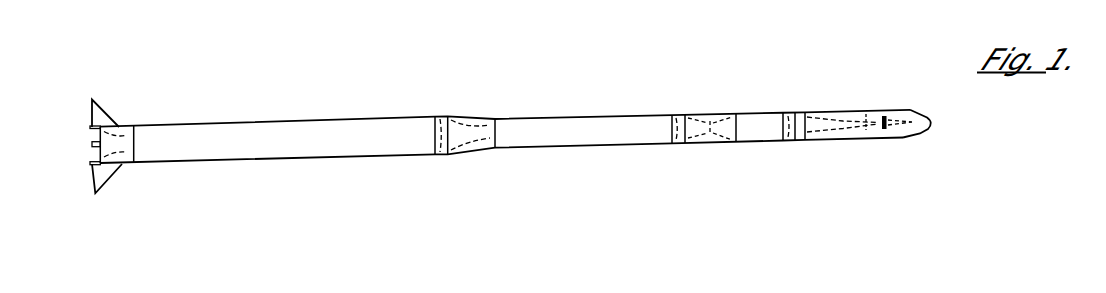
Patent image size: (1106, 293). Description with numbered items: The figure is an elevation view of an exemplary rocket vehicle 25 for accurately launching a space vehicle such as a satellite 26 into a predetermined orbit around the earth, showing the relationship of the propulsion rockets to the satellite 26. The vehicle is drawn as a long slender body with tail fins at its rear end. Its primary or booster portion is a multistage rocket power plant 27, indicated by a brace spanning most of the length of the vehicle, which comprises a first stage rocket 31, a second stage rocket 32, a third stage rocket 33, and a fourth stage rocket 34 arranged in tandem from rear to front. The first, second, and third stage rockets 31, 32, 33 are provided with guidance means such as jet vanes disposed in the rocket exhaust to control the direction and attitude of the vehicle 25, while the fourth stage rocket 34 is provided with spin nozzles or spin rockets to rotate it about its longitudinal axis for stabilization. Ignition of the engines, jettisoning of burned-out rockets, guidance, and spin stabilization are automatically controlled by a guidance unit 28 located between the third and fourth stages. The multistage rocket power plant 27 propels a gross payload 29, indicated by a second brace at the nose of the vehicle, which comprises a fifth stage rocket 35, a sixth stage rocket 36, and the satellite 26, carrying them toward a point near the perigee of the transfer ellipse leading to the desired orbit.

The rocket vehicle 25 is at (500, 151).
The satellite 26 is at (889, 117).
The multistage rocket power plant 27 is at (856, 85).
The guidance unit 28 is at (802, 113).
The gross payload 29 is at (937, 137).
The first stage rocket 31 is at (268, 155).
The second stage rocket 32 is at (613, 138).
The third stage rocket 33 is at (770, 135).
The fourth stage rocket 34 is at (842, 118).
The fifth stage rocket 35 is at (867, 114).
The sixth stage rocket 36 is at (914, 121).